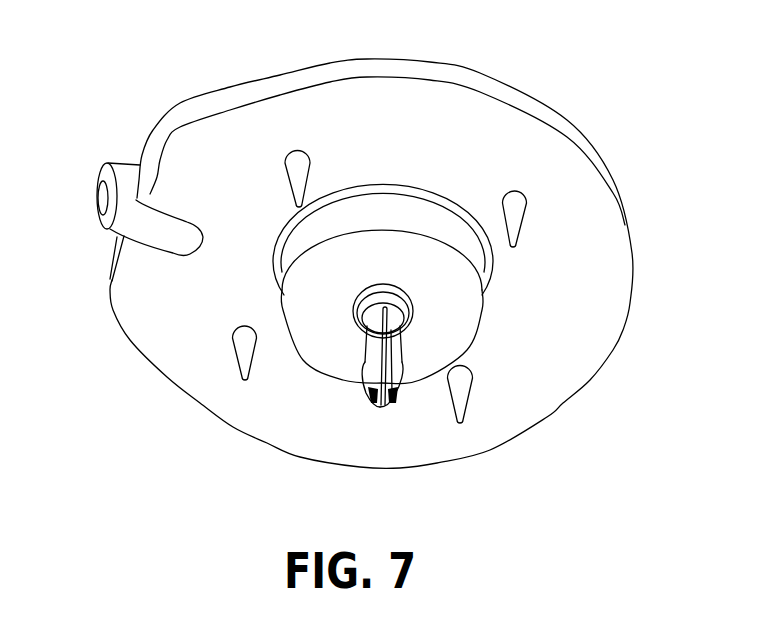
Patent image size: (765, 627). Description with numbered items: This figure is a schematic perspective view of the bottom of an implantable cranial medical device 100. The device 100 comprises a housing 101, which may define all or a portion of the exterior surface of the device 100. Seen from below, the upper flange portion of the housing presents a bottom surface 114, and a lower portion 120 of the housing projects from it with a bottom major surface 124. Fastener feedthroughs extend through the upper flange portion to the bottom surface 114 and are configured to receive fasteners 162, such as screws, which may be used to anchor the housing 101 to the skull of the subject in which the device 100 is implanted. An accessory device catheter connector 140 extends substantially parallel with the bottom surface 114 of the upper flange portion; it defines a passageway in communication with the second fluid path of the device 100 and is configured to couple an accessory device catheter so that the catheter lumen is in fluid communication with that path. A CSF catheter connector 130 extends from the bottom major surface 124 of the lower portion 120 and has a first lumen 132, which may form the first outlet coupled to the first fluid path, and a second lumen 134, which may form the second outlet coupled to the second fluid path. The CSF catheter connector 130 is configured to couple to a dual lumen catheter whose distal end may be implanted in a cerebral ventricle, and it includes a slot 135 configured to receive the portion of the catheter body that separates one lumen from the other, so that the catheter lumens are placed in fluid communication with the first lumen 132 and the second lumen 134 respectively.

The implantable medical device 100 is at (174, 84).
The housing 101 is at (132, 338).
The bottom surface 114 is at (592, 210).
The lower portion 120 is at (473, 257).
The bottom major surface 124 is at (466, 330).
The CSF catheter connector 130 is at (366, 342).
The first lumen 132 is at (398, 400).
The second lumen 134 is at (368, 400).
The slot 135 is at (392, 336).
The accessory device catheter connector 140 is at (115, 210).
The fasteners 162 is at (300, 181).